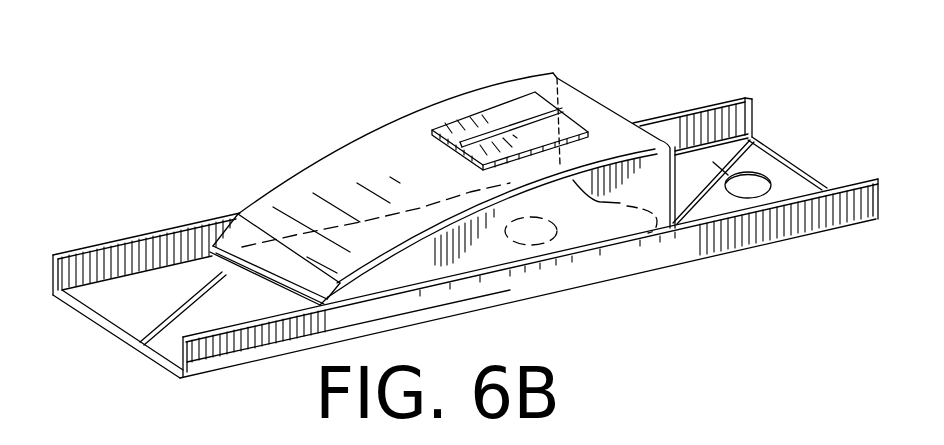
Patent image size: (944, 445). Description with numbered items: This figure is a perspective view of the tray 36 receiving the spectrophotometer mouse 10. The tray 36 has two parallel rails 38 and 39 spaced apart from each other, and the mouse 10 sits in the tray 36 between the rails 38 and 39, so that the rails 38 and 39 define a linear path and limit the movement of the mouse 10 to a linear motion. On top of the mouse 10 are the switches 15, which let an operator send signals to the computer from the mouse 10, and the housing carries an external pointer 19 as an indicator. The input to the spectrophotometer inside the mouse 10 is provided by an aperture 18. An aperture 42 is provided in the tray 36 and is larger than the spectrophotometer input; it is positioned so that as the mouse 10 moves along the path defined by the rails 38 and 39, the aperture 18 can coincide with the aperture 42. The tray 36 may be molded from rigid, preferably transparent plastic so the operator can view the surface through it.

The spectrophotometer mouse 10 is at (434, 82).
The switches 15 is at (512, 98).
The aperture 18 is at (553, 238).
The external pointer 19 is at (650, 232).
The tray 36 is at (740, 250).
The rail 38 is at (752, 108).
The rail 39 is at (890, 183).
The aperture 42 is at (760, 172).